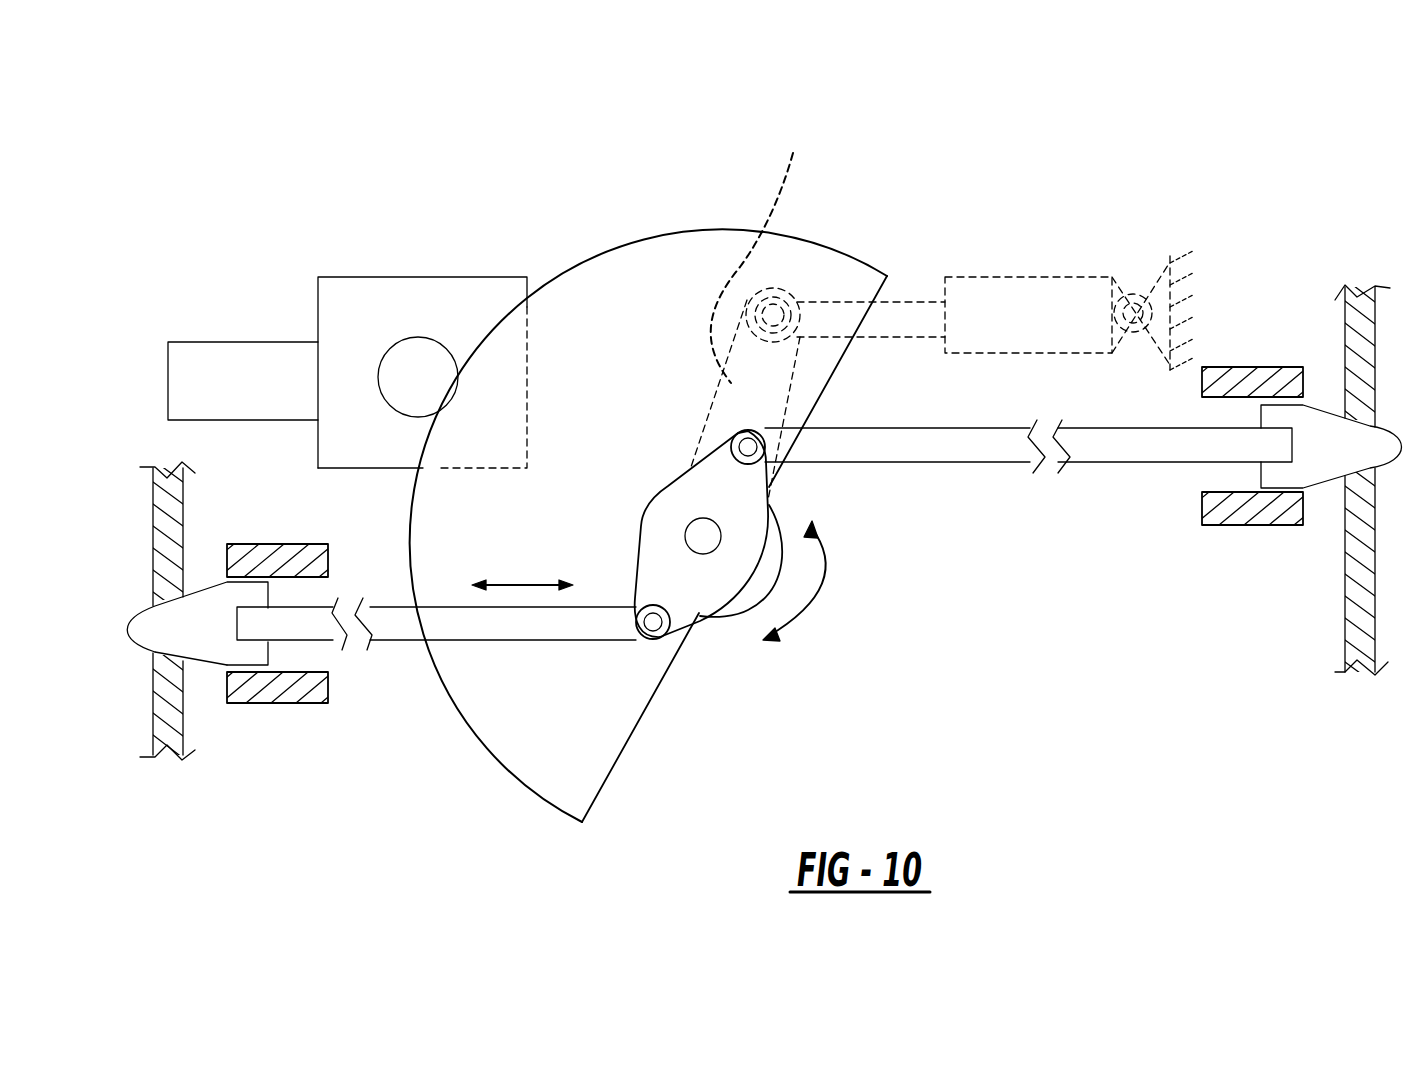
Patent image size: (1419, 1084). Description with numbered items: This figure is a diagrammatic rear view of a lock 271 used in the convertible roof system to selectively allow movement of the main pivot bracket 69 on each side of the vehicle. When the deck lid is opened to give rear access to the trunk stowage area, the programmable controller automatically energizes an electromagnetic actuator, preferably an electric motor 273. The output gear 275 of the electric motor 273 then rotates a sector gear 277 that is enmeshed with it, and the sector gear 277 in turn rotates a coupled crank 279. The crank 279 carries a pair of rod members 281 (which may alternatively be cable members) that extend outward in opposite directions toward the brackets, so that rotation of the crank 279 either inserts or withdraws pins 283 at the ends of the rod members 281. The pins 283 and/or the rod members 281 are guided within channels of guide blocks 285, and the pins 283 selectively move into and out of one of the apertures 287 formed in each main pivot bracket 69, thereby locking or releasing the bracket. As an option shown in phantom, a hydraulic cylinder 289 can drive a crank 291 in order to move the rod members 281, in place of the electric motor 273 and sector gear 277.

The main pivot bracket 69 is at (162, 550).
The lock 271 is at (846, 175).
The electric motor 273 is at (362, 297).
The output gear 275 is at (443, 340).
The sector gear 277 is at (644, 273).
The crank 279 is at (682, 593).
The rod members 281 is at (393, 622).
The pins 283 is at (193, 632).
The guide blocks 285 is at (242, 555).
The apertures 287 is at (158, 652).
The hydraulic cylinder 289 is at (1045, 290).
The crank 291 is at (817, 309).